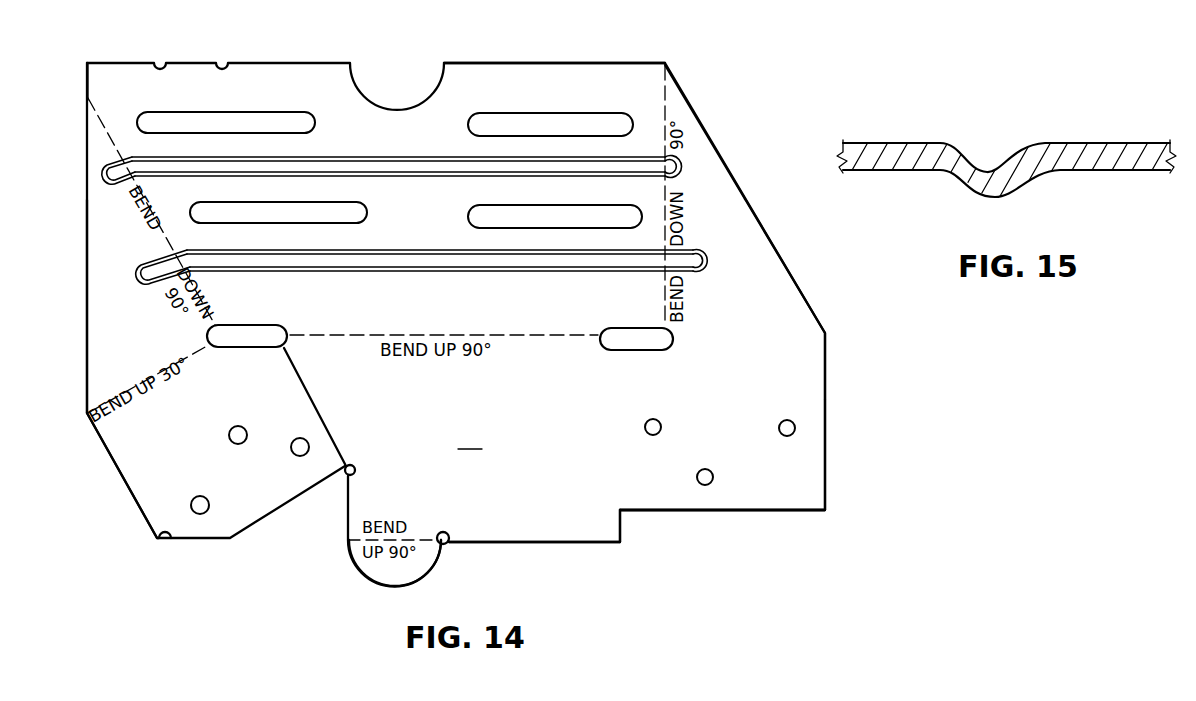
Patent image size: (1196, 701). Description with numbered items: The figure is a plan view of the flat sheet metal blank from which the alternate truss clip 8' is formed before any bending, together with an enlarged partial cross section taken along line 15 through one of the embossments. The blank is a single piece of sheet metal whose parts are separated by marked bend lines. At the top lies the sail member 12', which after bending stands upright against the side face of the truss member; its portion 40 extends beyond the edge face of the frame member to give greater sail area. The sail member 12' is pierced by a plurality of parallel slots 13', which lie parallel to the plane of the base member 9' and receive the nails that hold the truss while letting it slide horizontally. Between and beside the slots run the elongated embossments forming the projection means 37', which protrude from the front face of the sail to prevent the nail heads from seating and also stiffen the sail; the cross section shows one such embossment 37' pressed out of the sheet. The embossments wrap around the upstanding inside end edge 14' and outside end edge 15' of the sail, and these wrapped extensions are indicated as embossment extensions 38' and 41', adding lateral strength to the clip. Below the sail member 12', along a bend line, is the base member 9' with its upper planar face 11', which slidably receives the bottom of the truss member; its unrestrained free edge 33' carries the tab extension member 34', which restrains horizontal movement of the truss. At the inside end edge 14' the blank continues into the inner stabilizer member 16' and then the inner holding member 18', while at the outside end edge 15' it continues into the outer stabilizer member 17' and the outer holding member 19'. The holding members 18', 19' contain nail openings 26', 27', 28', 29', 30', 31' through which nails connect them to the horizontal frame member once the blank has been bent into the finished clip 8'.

In FIG. 14, the truss clip 8' is at (464, 325).
In FIG. 14, the base member 9' is at (587, 548).
In FIG. 14, the upper planar face 11' is at (474, 438).
In FIG. 14, the sail member 12' is at (554, 42).
In FIG. 14, the parallel slots 13' is at (389, 154).
In FIG. 14, the inside end edge 14' is at (128, 211).
In FIG. 14, the outside end edge 15' is at (756, 295).
In FIG. 14, the inner stabilizer member 16' is at (58, 306).
In FIG. 14, the outer stabilizer member 17' is at (728, 132).
In FIG. 14, the inner holding member 18' is at (122, 475).
In FIG. 14, the outer holding member 19' is at (752, 438).
In FIG. 14, the nail opening 26' is at (681, 409).
In FIG. 14, the nail opening 27' is at (722, 455).
In FIG. 14, the nail opening 28' is at (767, 419).
In FIG. 14, the nail opening 29' is at (196, 539).
In FIG. 14, the nail opening 30' is at (246, 415).
In FIG. 14, the nail opening 31' is at (294, 430).
In FIG. 14, the unrestrained free edge 33' is at (534, 569).
In FIG. 14, the tab extension member 34' is at (395, 582).
In FIG. 14, the projection means (embossments) 37' is at (412, 219).
In FIG. 15, the projection means (embossments) 37' is at (1015, 185).
In FIG. 14, the embossment extension 38' is at (115, 239).
In FIG. 14, the sail member portion 40 is at (110, 112).
In FIG. 14, the embossment extension 41' is at (712, 214).
In FIG. 14, the section line 15— 15 is at (414, 266).